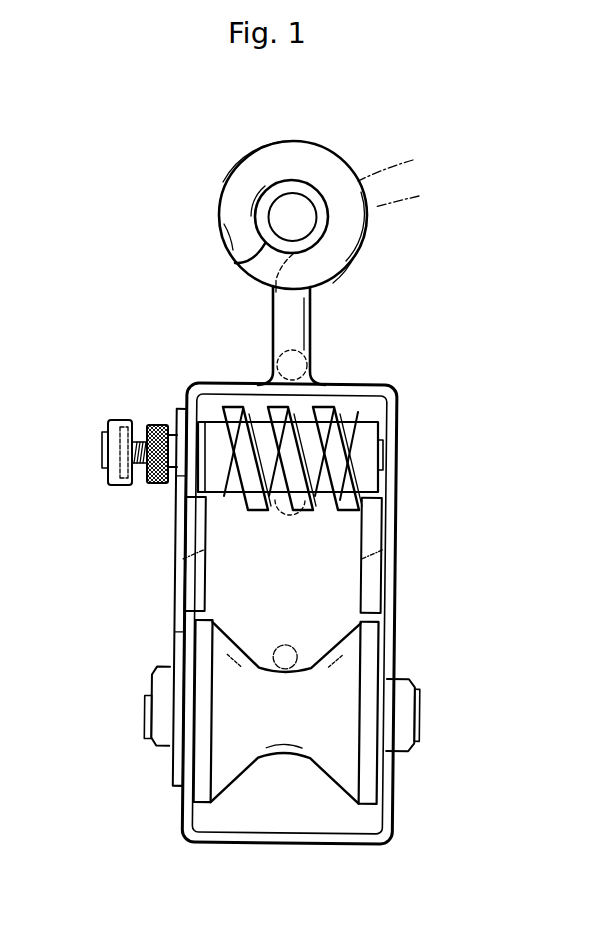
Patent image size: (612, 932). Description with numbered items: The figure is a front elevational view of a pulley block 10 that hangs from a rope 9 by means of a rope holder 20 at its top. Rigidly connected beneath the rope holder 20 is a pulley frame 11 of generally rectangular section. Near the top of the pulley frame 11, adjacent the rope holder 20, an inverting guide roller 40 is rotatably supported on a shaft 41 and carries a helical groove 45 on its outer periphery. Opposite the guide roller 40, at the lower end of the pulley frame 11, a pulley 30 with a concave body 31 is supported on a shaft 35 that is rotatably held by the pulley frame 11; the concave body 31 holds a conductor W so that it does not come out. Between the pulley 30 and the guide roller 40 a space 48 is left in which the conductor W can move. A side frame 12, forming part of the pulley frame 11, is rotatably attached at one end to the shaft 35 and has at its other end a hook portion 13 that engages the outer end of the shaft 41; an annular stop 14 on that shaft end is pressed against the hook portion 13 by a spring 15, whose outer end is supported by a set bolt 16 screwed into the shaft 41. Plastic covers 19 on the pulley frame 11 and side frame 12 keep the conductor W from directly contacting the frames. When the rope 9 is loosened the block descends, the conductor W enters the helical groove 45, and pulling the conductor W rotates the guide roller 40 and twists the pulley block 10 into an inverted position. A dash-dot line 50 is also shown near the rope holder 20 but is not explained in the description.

The rope 9 is at (303, 220).
The pulley block 10 is at (222, 382).
The pulley frame 11 is at (378, 386).
The side frame 12 is at (183, 558).
The hook portion 13 is at (180, 410).
The annular stop 14 is at (157, 430).
The spring 15 is at (140, 437).
The set bolt 16 is at (115, 472).
The plastic covers 19 is at (203, 580).
The rope holder 20 is at (227, 208).
The pulley 30 is at (347, 750).
The concave body 31 is at (295, 757).
The shaft 35 is at (383, 708).
The inverting guide roller 40 is at (383, 452).
The shaft 41 is at (373, 438).
The helical groove 45 is at (323, 492).
The space 48 is at (323, 587).
The wire 50 is at (402, 173).
The conductor W is at (292, 645).